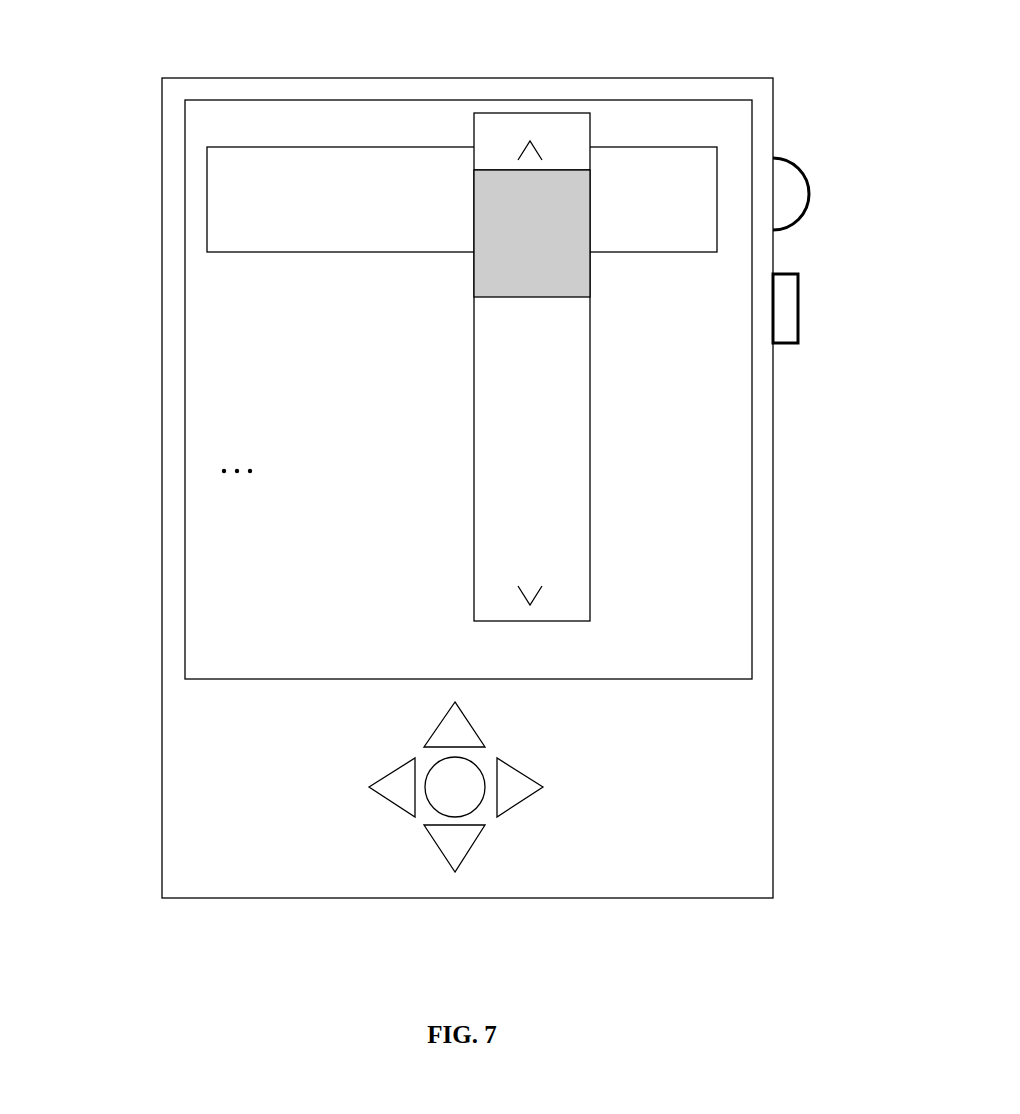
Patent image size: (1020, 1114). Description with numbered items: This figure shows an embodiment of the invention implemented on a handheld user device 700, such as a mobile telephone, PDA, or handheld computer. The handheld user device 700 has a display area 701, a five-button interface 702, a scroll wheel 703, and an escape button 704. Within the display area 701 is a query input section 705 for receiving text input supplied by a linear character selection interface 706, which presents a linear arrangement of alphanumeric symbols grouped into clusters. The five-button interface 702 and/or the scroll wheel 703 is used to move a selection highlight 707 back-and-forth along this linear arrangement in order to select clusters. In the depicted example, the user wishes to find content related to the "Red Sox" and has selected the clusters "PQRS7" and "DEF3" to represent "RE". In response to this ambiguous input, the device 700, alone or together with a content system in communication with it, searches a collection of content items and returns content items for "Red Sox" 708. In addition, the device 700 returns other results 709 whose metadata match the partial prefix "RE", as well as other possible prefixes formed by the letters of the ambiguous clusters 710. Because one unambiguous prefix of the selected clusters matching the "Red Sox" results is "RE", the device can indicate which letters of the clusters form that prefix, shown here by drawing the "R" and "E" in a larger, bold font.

The handheld user device 700 is at (751, 922).
The display area 701 is at (170, 659).
The five-button interface 702 is at (393, 853).
The scroll wheel 703 is at (800, 165).
The escape button 704 is at (798, 345).
The query input section 705 is at (193, 158).
The linear character selection interface 706 is at (625, 564).
The selection highlight 707 is at (590, 260).
The content items for "Red Sox" 708 is at (208, 299).
The other results 709 is at (208, 467).
The ambiguous clusters 710 is at (417, 136).